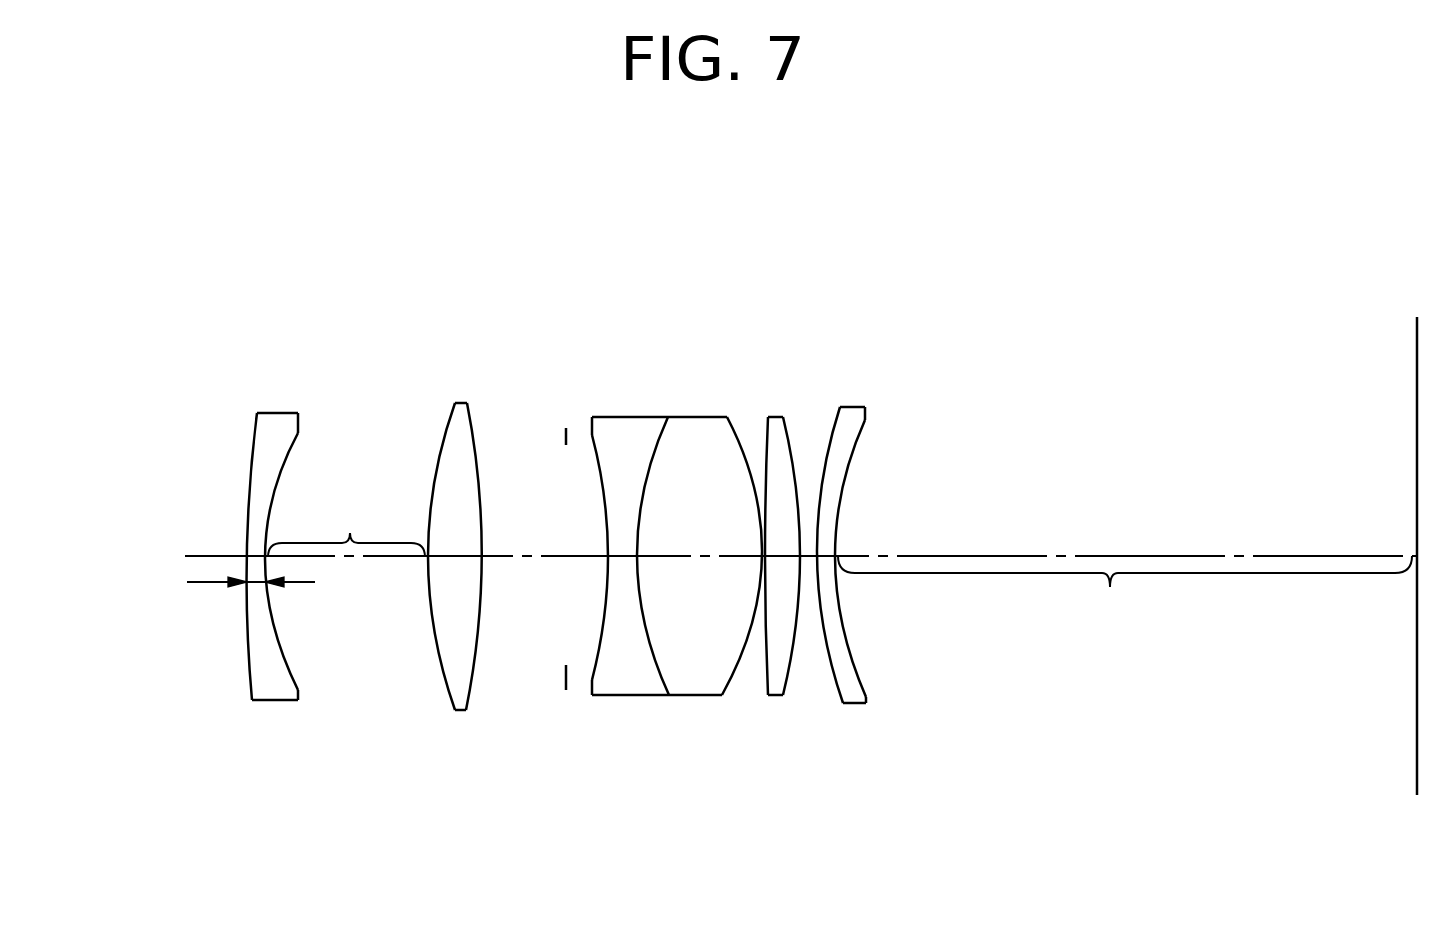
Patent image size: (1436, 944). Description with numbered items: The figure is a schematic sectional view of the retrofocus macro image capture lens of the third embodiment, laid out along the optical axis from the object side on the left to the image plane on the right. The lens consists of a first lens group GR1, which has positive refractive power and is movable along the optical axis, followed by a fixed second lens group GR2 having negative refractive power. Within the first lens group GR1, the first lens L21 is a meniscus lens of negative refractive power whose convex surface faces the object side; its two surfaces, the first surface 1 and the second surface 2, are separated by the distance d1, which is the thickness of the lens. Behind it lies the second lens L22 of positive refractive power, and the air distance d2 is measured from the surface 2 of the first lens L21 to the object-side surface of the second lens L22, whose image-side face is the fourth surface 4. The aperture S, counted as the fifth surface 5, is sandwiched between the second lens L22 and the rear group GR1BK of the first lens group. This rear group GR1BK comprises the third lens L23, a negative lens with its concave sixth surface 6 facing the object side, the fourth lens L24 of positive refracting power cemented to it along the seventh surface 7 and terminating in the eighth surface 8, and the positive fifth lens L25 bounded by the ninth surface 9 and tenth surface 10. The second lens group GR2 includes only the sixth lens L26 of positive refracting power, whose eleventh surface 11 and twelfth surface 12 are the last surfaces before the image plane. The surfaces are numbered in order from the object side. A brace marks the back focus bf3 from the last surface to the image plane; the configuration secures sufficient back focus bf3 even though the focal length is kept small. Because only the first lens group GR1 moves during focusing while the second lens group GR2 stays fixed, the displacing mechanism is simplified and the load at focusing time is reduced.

The first surface 1 is at (251, 692).
The second surface 2 is at (298, 690).
The fourth surface 4 is at (467, 707).
The fifth surface 5 is at (565, 690).
The sixth surface 6 is at (593, 697).
The seventh surface 7 is at (667, 697).
The eighth surface 8 is at (731, 697).
The ninth surface 9 is at (770, 697).
The tenth surface 10 is at (789, 697).
The eleventh surface 11 is at (843, 703).
The twelfth surface 12 is at (868, 705).
The first lens L21 is at (278, 700).
The second lens L22 is at (460, 712).
The third lens L23 is at (625, 698).
The fourth lens L24 is at (692, 698).
The fifth lens L25 is at (777, 697).
The sixth lens L26 is at (860, 707).
The aperture S is at (566, 441).
The first lens group GR1 is at (807, 298).
The second lens group GR2 is at (897, 298).
The rear group of the first lens group GR1BK is at (793, 383).
The distance between lens surfaces of the first lens d1 is at (229, 588).
The distance between second and third surfaces d2 is at (346, 521).
The back focus bf3 is at (1125, 597).